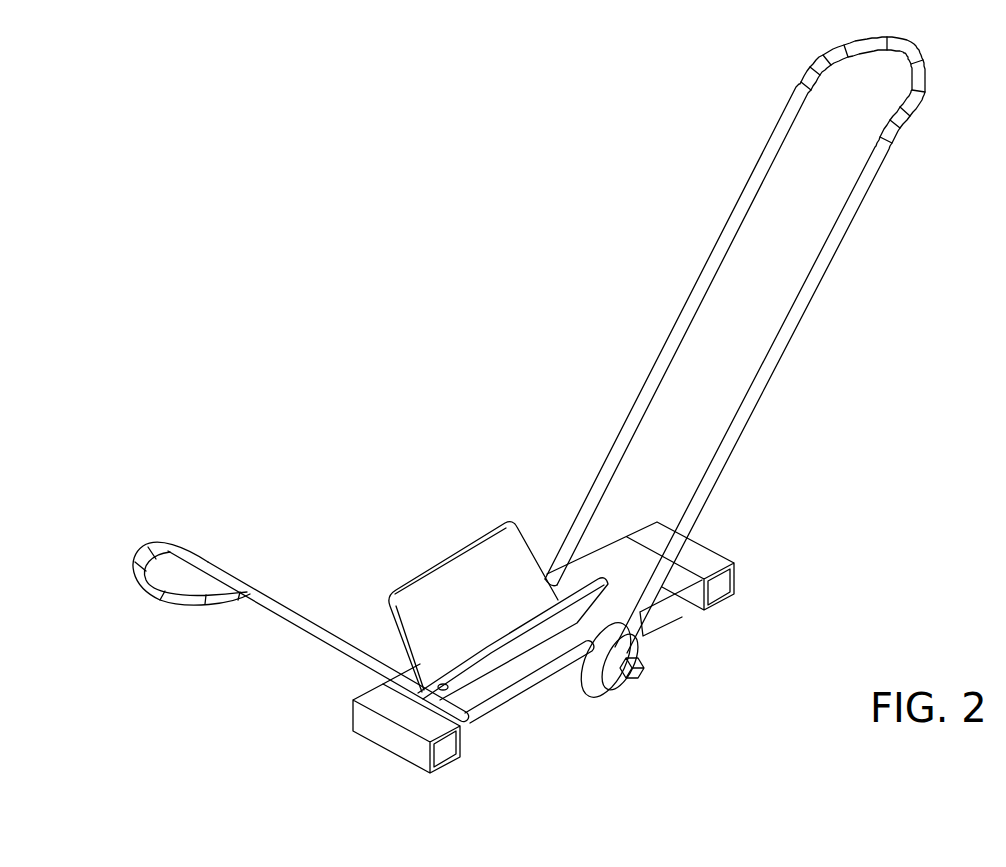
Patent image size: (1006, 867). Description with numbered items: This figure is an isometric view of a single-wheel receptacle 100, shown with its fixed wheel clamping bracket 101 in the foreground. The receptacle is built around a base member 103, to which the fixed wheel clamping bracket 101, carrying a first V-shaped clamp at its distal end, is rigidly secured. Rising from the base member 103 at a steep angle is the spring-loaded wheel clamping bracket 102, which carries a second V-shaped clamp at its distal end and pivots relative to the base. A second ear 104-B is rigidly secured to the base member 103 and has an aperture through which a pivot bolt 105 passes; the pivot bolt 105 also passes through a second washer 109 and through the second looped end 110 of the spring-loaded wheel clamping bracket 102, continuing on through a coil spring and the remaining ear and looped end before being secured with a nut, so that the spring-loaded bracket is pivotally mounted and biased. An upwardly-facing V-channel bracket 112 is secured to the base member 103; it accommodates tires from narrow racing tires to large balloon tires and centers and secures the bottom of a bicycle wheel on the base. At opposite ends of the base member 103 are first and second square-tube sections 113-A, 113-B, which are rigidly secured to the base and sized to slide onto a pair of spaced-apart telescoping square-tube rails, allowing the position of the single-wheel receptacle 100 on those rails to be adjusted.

The single-wheel receptacle 100 is at (436, 221).
The fixed wheel clamping bracket 101 is at (211, 572).
The spring-loaded wheel clamping bracket 102 is at (818, 270).
The base member 103 is at (623, 562).
The second ear 104-B is at (648, 625).
The pivot bolt 105 is at (640, 670).
The second washer 109 is at (613, 692).
The second looped end 110 is at (605, 692).
The V-channel bracket 112 is at (460, 568).
The first square-tube section 113-A is at (705, 556).
The second square-tube section 113-B is at (395, 742).